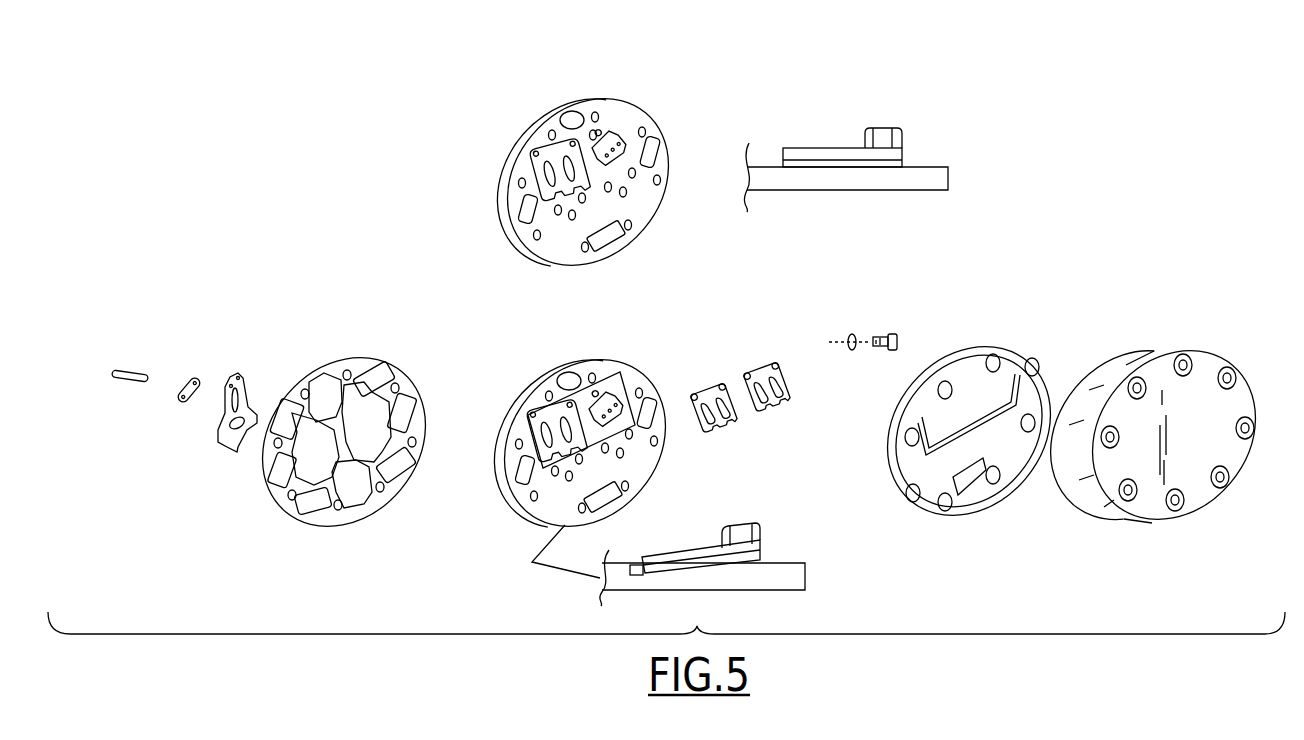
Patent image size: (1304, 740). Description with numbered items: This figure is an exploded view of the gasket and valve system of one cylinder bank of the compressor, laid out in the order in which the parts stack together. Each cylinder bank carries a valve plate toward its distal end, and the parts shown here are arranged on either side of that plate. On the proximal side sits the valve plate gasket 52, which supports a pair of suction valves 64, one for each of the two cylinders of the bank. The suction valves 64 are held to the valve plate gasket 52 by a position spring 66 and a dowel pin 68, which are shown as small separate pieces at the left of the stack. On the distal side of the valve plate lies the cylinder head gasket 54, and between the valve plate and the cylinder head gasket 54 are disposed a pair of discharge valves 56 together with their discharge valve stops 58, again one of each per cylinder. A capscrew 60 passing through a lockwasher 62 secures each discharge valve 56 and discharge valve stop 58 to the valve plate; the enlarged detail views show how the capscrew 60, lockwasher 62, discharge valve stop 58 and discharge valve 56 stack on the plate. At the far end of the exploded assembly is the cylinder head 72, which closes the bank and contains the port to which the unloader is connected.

The valve plate gasket 52 is at (352, 368).
The cylinder head gasket 54 is at (975, 385).
The discharge valve 56 is at (703, 432).
The discharge valve stop 58 is at (748, 148).
The capscrew 60 is at (903, 137).
The lockwasher 62 is at (848, 338).
The suction valve 64 is at (228, 447).
The position spring 66 is at (183, 398).
The dowel pin 68 is at (133, 372).
The cylinder head 72 is at (1165, 365).